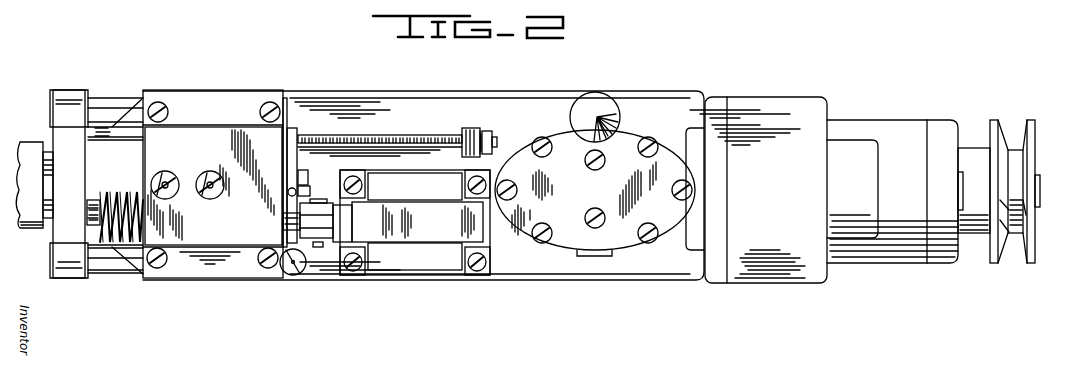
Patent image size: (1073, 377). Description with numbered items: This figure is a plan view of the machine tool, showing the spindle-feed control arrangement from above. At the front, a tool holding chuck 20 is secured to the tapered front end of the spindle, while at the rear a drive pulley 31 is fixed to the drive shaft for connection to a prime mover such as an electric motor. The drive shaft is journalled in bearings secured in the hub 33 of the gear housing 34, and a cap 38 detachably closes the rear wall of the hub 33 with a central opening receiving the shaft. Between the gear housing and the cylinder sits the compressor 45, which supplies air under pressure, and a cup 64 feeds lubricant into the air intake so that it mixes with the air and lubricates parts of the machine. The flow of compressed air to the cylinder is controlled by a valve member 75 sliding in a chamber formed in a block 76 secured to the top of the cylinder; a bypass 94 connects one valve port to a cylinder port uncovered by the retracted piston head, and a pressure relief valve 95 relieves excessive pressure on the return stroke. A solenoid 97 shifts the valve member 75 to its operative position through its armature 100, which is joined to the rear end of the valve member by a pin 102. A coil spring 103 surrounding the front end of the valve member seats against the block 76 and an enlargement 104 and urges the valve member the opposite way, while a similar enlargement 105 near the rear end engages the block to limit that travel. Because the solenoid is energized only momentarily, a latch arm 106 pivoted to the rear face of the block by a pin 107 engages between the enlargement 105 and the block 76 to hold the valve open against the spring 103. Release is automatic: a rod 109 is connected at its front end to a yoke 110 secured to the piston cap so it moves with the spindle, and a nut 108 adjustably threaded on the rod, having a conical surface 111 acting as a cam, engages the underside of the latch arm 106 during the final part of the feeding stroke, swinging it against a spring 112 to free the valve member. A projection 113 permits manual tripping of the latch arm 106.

The tool holding chuck 20 is at (25, 150).
The drive pulley 31 is at (997, 127).
The hub 33 is at (885, 132).
The gear housing 34 is at (800, 112).
The cap 38 is at (942, 132).
The compressor 45 is at (627, 140).
The cup 64 is at (583, 103).
The valve member 75 is at (93, 210).
The block 76 is at (285, 125).
The bypass 94 is at (207, 197).
The pressure relief valve 95 is at (162, 172).
The solenoid 97 is at (419, 260).
The armature 100 is at (338, 236).
The pin 102 is at (288, 268).
The coil spring 103 is at (125, 242).
The enlargement 104 is at (100, 203).
The enlargement 105 is at (290, 220).
The latch arm 106 is at (298, 128).
The pin 107 is at (303, 172).
The nut 108 is at (472, 130).
The rod 109 is at (390, 137).
The yoke 110 is at (65, 107).
The conical surface 111 is at (465, 130).
The spring 112 is at (305, 196).
The projection 113 is at (290, 276).